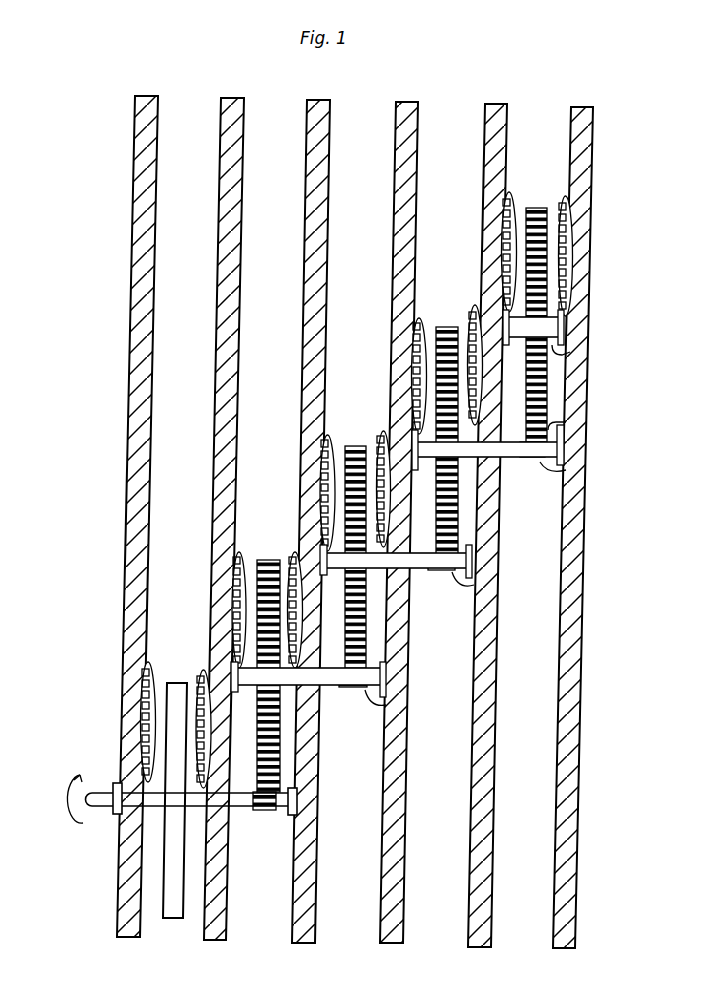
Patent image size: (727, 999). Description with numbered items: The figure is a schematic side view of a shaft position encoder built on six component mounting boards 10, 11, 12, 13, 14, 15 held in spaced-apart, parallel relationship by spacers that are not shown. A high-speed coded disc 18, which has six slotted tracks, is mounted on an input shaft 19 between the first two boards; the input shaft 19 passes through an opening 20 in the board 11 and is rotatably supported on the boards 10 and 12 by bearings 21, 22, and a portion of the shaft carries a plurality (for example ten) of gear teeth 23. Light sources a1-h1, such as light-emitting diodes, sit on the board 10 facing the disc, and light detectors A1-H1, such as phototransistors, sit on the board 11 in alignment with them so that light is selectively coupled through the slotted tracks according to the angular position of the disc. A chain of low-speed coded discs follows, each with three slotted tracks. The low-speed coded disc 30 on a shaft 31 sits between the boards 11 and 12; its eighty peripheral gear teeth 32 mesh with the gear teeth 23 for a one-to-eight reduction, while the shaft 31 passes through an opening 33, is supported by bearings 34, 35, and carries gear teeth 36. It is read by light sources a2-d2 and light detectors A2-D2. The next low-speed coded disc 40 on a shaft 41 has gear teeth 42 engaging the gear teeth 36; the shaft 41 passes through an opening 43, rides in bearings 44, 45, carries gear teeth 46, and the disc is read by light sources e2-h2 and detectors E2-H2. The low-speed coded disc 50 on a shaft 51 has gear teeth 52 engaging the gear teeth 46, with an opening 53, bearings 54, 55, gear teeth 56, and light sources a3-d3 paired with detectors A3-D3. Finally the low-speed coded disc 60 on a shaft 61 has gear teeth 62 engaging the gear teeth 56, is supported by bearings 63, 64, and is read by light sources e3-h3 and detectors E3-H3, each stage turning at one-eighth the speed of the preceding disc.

The component mounting board 10 is at (125, 937).
The component mounting board 11 is at (218, 940).
The component mounting board 12 is at (305, 943).
The component mounting board 13 is at (392, 944).
The component mounting board 14 is at (478, 947).
The component mounting board 15 is at (565, 948).
The high-speed coded disc 18 is at (175, 920).
The input shaft 19 is at (237, 812).
The opening 20 is at (280, 762).
The bearing 21 is at (128, 812).
The bearing 22 is at (298, 800).
The gear teeth 23 is at (270, 812).
The low-speed coded disc 30 is at (238, 580).
The shaft 31 is at (372, 658).
The gear teeth 32 is at (272, 722).
The opening 33 is at (355, 680).
The bearing 34 is at (245, 665).
The bearing 35 is at (388, 672).
The gear teeth 36 is at (388, 705).
The low-speed coded disc 40 is at (352, 462).
The shaft 41 is at (375, 583).
The gear teeth 42 is at (352, 612).
The opening 43 is at (452, 528).
The bearing 44 is at (315, 535).
The bearing 45 is at (470, 552).
The gear teeth 46 is at (474, 582).
The low-speed coded disc 50 is at (445, 345).
The shaft 51 is at (560, 430).
The gear teeth 52 is at (442, 498).
The opening 53 is at (564, 464).
The bearing 54 is at (420, 402).
The bearing 55 is at (567, 441).
The gear teeth 56 is at (566, 472).
The low-speed coded disc 60 is at (540, 232).
The shaft 61 is at (566, 322).
The gear teeth 62 is at (570, 256).
The bearing 63 is at (503, 300).
The bearing 64 is at (572, 352).
The light detectors A1-H1 is at (150, 665).
The light sources a1-h1 is at (205, 675).
The light detectors A2-D2 is at (298, 556).
The light sources a2-d2 is at (240, 560).
The light detectors E2-H2 is at (385, 432).
The light sources e2-h2 is at (330, 445).
The light detectors A3-D3 is at (480, 330).
The light sources a3-d3 is at (425, 345).
The light detectors E3-H3 is at (575, 205).
The light sources e3-h3 is at (515, 225).